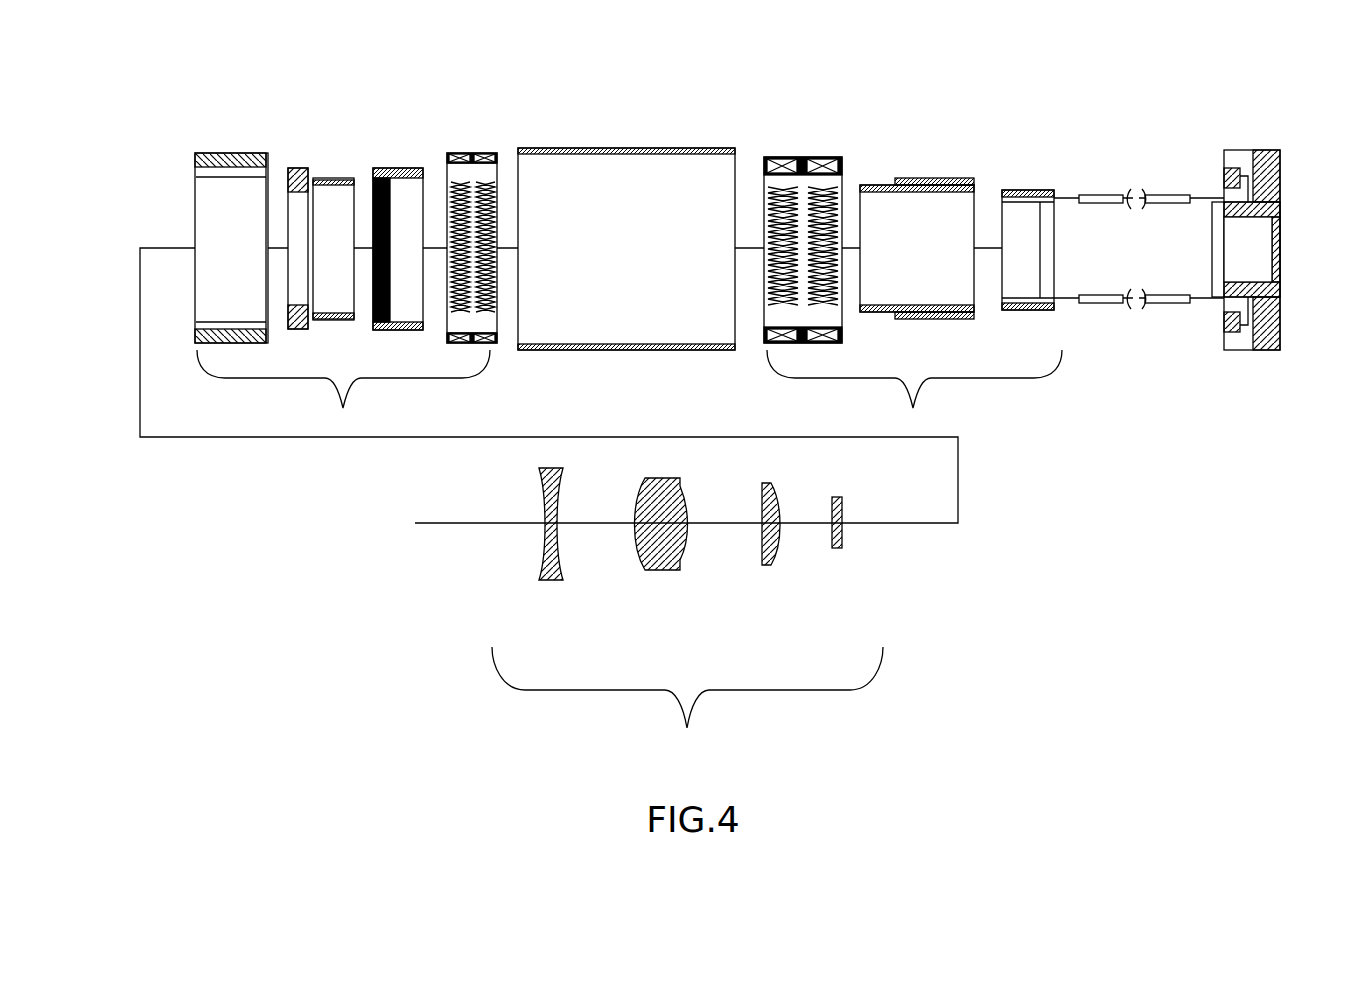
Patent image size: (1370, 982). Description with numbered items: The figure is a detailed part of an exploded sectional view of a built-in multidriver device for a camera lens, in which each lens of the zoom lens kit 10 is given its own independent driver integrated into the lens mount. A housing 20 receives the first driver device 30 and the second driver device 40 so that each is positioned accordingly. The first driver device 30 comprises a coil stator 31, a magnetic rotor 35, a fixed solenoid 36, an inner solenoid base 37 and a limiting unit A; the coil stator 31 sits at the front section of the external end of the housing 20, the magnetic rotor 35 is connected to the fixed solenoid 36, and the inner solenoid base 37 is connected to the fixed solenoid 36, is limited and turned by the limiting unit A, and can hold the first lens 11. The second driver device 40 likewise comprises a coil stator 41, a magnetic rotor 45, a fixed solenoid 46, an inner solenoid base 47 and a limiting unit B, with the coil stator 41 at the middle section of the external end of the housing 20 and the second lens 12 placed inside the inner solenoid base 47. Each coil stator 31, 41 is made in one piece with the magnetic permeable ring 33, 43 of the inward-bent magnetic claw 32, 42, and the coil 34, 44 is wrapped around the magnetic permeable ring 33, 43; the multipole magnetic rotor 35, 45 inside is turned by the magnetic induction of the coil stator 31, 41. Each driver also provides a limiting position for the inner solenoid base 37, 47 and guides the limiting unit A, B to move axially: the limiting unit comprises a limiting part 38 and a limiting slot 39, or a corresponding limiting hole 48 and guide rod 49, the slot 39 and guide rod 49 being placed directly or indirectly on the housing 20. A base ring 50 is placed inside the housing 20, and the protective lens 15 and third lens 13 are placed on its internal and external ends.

The zoom lens kit 10 is at (687, 706).
The first lens 11 is at (548, 571).
The second lens 12 is at (635, 573).
The third lens 13 is at (763, 560).
The protective lens 15 is at (841, 550).
The housing 20 is at (638, 148).
The first driver device 30 is at (343, 393).
The coil stator 31 is at (453, 142).
The magnetic claw 32 is at (497, 195).
The magnetic permeable ring 33 is at (498, 166).
The coil 34 is at (487, 166).
The magnetic rotor 35 is at (418, 167).
The fixed solenoid 36 is at (371, 167).
The inner solenoid base 37 is at (334, 177).
The limiting part 38 is at (292, 167).
The limiting slot 39 is at (233, 165).
The second driver device 40 is at (914, 393).
The coil stator 41 is at (812, 130).
The magnetic claw 42 is at (764, 188).
The magnetic permeable ring 43 is at (766, 157).
The coil 44 is at (785, 157).
The magnetic rotor 45 is at (912, 178).
The fixed solenoid 46 is at (976, 186).
The inner solenoid base 47 is at (1042, 190).
The limiting hole 48 is at (1003, 190).
The guide rod 49 is at (1098, 196).
The base ring 50 is at (1283, 345).
The limiting unit A is at (237, 184).
The limiting unit B is at (1083, 213).